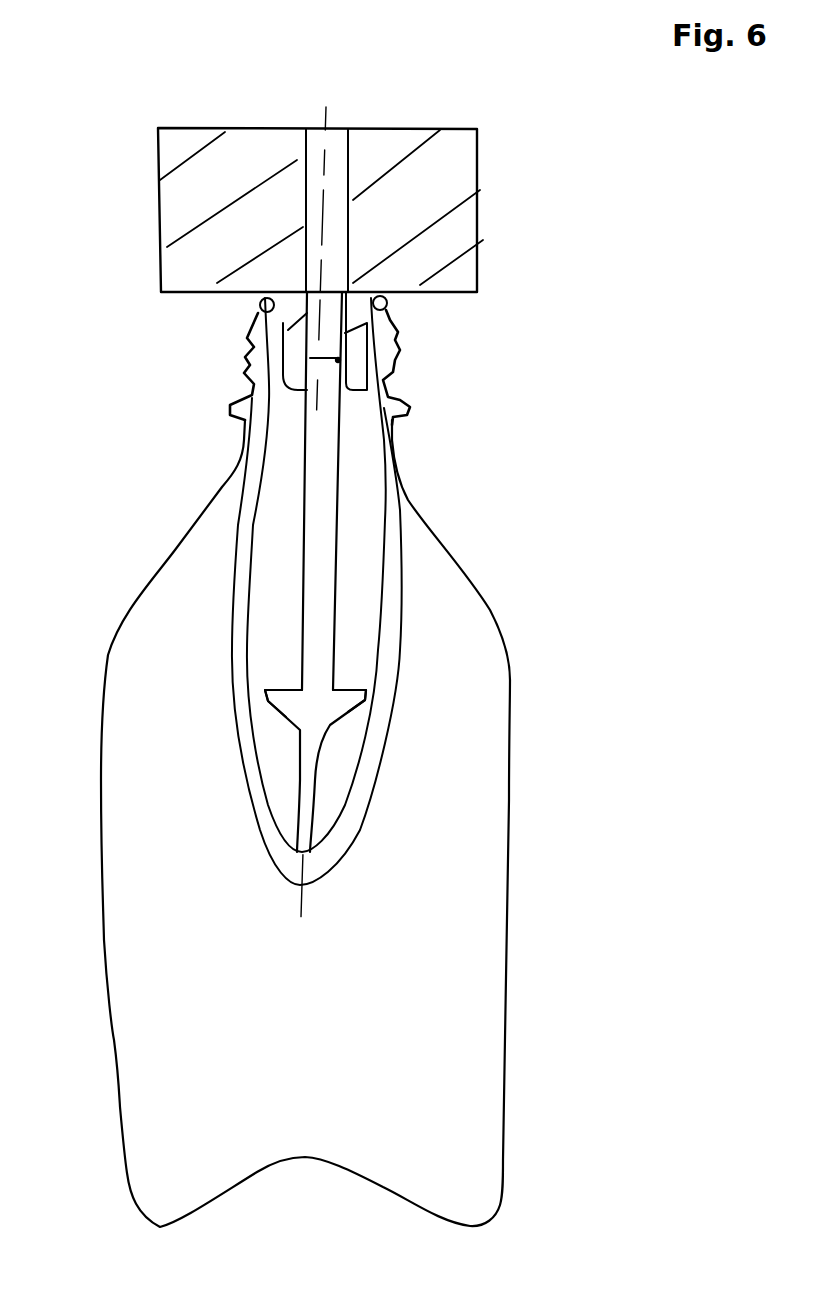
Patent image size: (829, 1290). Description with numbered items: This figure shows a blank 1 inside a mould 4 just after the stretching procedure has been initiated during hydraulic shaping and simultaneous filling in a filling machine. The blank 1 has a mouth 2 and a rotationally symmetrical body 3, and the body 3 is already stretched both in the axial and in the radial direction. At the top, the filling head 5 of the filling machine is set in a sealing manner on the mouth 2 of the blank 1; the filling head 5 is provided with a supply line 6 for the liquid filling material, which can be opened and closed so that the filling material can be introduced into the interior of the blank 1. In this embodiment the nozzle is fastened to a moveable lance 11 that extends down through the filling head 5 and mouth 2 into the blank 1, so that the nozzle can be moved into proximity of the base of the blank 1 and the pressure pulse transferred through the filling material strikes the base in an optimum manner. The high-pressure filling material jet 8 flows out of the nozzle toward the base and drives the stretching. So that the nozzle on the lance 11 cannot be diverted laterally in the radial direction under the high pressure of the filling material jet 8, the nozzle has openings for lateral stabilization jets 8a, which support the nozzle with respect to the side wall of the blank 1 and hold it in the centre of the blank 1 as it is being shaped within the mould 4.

The blank 1 is at (405, 585).
The mouth 2 is at (400, 370).
The body 3 is at (350, 820).
The mould 4 is at (503, 1005).
The filling head 5 is at (420, 212).
The supply line 6 is at (330, 135).
The filling material jet 8 is at (310, 765).
The lateral stabilization jets 8a is at (367, 693).
The moveable lance 11 is at (325, 495).